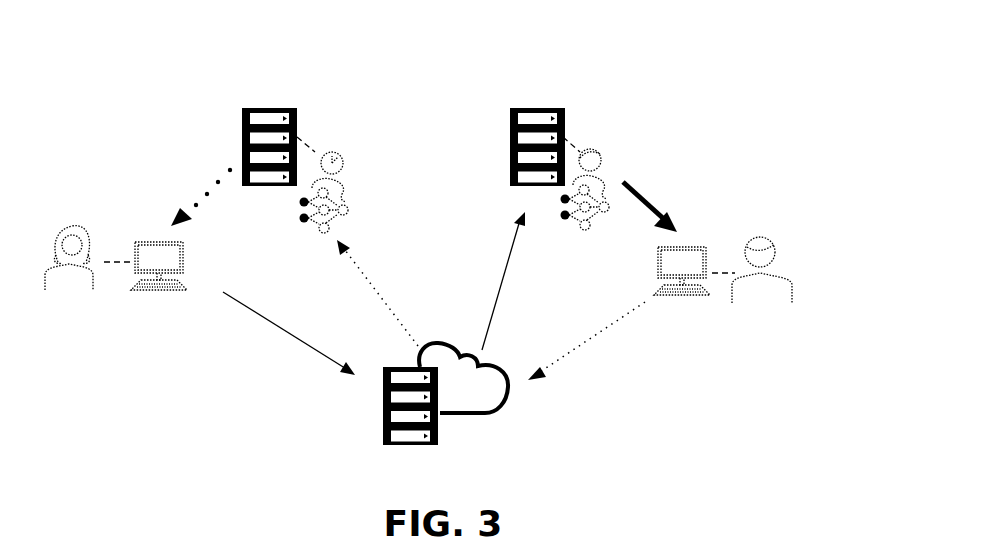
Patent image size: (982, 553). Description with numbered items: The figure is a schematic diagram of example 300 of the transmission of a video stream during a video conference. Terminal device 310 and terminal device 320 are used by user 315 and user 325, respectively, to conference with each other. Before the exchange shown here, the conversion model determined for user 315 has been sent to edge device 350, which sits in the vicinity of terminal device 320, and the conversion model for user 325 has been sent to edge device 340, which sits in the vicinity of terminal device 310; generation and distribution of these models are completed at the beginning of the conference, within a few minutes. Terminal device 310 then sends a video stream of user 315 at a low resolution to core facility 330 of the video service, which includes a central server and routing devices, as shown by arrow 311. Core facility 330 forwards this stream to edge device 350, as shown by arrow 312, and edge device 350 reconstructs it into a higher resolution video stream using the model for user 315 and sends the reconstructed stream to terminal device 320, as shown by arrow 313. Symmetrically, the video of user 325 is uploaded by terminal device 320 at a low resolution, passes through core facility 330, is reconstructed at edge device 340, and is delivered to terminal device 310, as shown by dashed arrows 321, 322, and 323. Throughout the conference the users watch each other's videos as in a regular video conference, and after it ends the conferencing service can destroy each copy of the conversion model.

The example 300 is at (140, 43).
The terminal device 310 is at (158, 288).
The arrow 311 is at (258, 312).
The arrow 312 is at (503, 288).
The arrow 313 is at (650, 195).
The user 315 is at (73, 223).
The terminal device 320 is at (697, 295).
The dashed arrow 321 is at (592, 337).
The dashed arrow 322 is at (372, 288).
The dashed arrow 323 is at (210, 192).
The user 325 is at (755, 235).
The core facility 330 is at (438, 420).
The edge device 340 is at (273, 107).
The edge device 350 is at (547, 107).